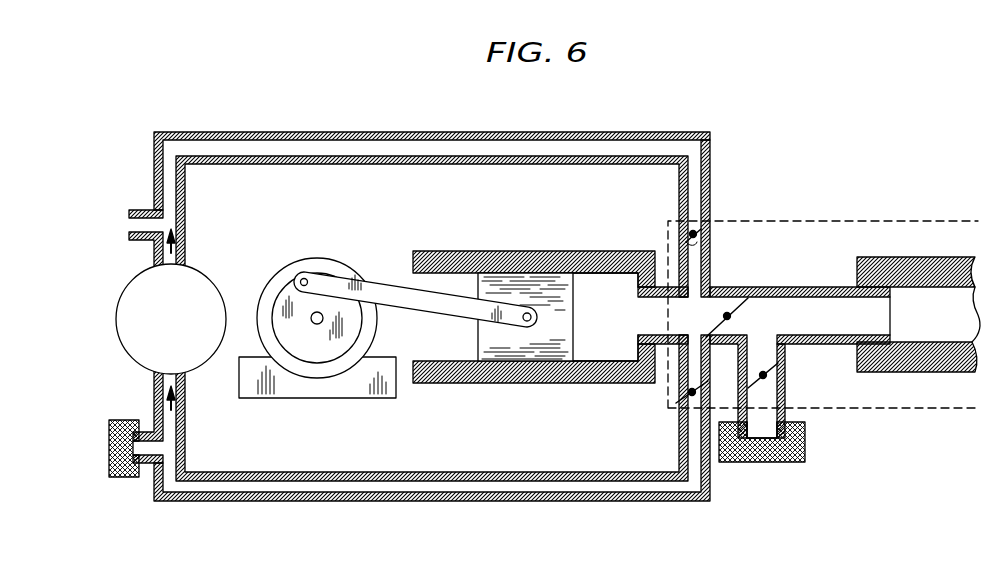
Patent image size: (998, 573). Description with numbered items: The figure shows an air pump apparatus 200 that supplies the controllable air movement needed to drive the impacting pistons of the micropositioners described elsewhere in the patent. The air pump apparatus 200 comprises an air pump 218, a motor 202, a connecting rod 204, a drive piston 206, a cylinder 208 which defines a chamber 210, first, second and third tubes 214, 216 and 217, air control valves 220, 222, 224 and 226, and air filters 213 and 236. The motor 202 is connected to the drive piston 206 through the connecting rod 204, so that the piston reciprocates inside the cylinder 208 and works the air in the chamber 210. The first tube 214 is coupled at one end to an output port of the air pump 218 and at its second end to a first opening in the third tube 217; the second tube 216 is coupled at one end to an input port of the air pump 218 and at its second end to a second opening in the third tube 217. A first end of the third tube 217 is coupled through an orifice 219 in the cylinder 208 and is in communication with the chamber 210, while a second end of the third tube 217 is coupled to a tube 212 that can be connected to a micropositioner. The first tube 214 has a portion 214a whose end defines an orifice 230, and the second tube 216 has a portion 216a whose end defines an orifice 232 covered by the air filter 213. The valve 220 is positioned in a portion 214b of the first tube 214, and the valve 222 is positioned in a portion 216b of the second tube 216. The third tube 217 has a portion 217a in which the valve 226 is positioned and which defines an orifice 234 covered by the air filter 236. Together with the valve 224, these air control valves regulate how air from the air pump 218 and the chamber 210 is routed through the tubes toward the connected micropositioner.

The air pump apparatus 200 is at (455, 115).
The motor 202 is at (283, 273).
The connecting rod 204 is at (382, 286).
The drive piston 206 is at (530, 346).
The cylinder 208 is at (450, 384).
The chamber 210 is at (605, 338).
The tube 212 is at (925, 372).
The air filter 213 is at (109, 433).
The first tube 214 is at (577, 131).
The portion of first tube 214a is at (141, 208).
The portion of first tube 214b is at (703, 230).
The second tube 216 is at (440, 502).
The portion of second tube 216a is at (152, 430).
The portion of second tube 216b is at (717, 388).
The third tube 217 is at (812, 287).
The portion of third tube 217a is at (787, 388).
The air pump 218 is at (116, 330).
The orifice 219 is at (637, 316).
The air control valve 220 is at (707, 242).
The air control valve 222 is at (676, 402).
The air control valve 224 is at (750, 298).
The air control valve 226 is at (778, 377).
The orifice 230 is at (128, 225).
The orifice 232 is at (152, 465).
The orifice 234 is at (760, 432).
The air filter 236 is at (787, 463).